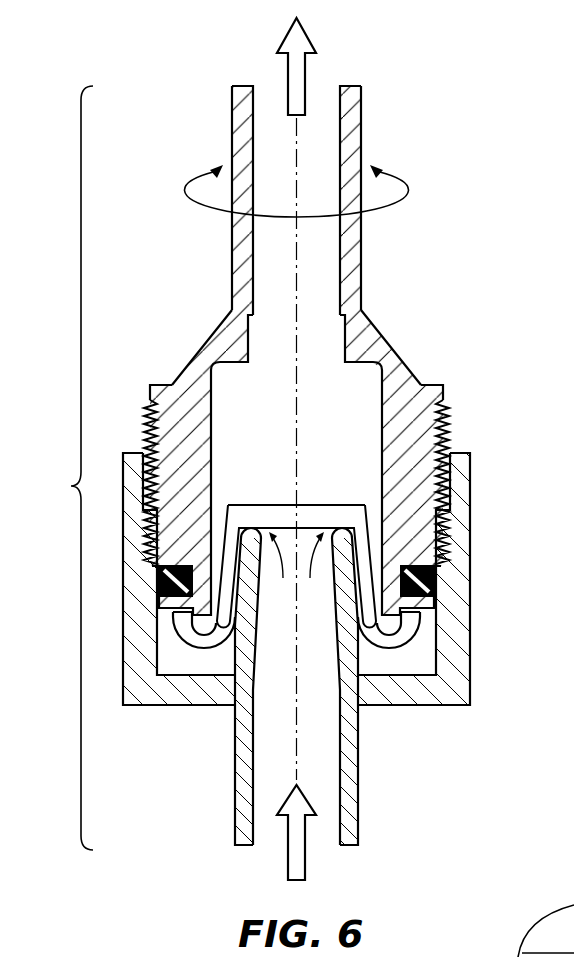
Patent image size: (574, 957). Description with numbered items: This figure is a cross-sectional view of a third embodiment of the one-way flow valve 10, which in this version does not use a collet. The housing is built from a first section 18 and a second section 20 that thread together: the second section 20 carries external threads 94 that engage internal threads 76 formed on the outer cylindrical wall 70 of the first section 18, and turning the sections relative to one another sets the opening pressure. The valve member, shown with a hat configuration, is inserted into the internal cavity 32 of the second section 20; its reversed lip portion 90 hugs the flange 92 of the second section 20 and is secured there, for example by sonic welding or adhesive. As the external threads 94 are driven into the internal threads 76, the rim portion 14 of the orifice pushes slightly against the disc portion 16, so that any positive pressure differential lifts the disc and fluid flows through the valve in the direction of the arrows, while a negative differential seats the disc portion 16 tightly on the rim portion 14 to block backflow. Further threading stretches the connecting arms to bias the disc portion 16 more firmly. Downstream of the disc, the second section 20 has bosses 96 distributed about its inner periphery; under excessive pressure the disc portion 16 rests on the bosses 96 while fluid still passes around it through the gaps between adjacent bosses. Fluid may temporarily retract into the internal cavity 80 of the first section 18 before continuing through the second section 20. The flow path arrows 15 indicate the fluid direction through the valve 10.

The one-way flow valve 10 is at (59, 468).
The rim portion 14 is at (332, 582).
The fluid flow arrows 15 is at (302, 527).
The disc portion 16 is at (280, 507).
The first section 18 is at (482, 714).
The second section 20 is at (443, 326).
The internal cavity 32 is at (406, 378).
The outer cylindrical wall 70 is at (461, 555).
The internal threads 76 is at (443, 522).
The internal cavity 80 is at (376, 664).
The lip portion 90 is at (413, 623).
The flange 92 is at (383, 624).
The external threads 94 is at (446, 424).
The boss 96 is at (354, 360).